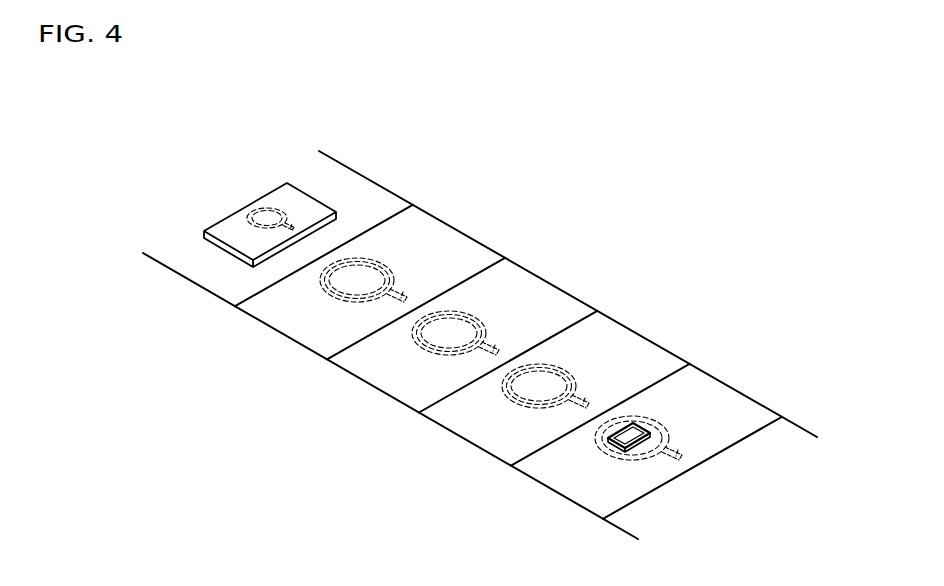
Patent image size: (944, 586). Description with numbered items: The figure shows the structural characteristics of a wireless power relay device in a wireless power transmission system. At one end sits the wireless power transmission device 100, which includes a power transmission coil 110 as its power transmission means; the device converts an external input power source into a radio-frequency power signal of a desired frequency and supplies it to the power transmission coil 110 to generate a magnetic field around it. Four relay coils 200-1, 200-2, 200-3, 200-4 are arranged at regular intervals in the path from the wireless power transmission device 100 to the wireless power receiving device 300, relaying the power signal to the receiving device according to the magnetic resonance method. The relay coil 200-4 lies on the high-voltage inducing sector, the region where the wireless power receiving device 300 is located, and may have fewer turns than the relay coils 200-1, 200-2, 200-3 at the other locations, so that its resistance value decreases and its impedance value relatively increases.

The wireless power transmission device 100 is at (313, 191).
The power transmission coil 110 is at (251, 226).
The relay coil 200-1 is at (332, 296).
The relay coil 200-2 is at (424, 350).
The relay coil 200-3 is at (512, 402).
The relay coil 200-4 is at (606, 456).
The wireless power receiving device 300 is at (648, 427).